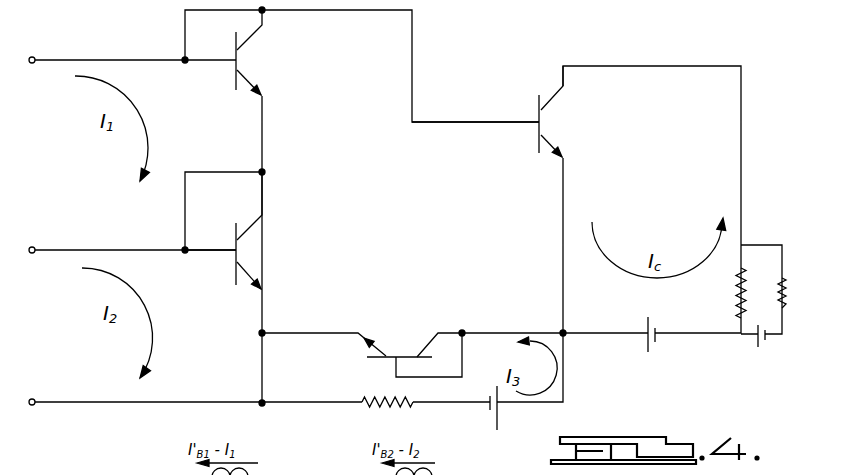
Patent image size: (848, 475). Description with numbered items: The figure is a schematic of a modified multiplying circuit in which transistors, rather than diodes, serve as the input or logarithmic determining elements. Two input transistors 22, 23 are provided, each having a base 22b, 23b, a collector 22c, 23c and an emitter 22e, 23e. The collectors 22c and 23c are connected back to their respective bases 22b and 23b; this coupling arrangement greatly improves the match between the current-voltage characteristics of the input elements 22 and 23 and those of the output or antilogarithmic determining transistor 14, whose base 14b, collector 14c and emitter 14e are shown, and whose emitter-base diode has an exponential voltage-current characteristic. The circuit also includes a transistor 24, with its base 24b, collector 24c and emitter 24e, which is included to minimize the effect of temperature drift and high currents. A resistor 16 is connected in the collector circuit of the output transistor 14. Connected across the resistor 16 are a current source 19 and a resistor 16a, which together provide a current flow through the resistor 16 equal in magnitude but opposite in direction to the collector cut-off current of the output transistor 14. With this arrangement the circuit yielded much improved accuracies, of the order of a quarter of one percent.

The transistor 14 is at (597, 128).
The base 14b is at (537, 133).
The collector 14c is at (553, 92).
The emitter 14e is at (554, 147).
The transistor 22 is at (306, 75).
The base 22b is at (231, 71).
The collector 22c is at (255, 45).
The emitter 22e is at (256, 84).
The transistor 23 is at (312, 266).
The base 23b is at (232, 262).
The collector 23c is at (250, 230).
The emitter 23e is at (254, 277).
The transistor 24 is at (419, 323).
The base 24b is at (392, 371).
The collector 24c is at (431, 340).
The emitter 24e is at (372, 345).
The resistor 16 is at (738, 286).
The resistor 16a is at (780, 286).
The current source 19 is at (768, 341).